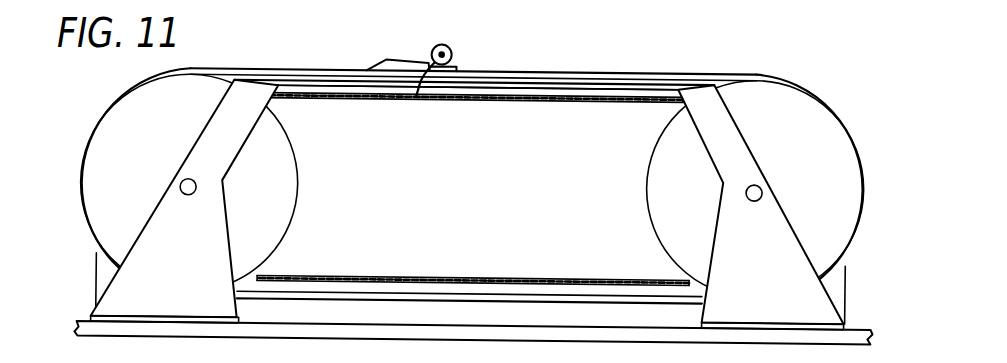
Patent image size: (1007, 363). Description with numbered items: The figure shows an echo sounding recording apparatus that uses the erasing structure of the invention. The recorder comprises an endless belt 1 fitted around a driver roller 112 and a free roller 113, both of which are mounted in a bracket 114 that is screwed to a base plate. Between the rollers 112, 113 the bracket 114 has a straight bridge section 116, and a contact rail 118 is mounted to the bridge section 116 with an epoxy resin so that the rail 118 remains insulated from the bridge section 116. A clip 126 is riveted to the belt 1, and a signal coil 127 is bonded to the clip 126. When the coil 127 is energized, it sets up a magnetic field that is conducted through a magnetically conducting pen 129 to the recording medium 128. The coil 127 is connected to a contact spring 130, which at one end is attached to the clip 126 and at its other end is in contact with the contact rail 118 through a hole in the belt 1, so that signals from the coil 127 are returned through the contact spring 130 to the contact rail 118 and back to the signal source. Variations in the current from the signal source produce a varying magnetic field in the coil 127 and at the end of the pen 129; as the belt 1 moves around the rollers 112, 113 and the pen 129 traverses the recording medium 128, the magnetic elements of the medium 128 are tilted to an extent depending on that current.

The endless belt 1 is at (696, 76).
The driver roller 112 is at (812, 112).
The free roller 113 is at (105, 114).
The bracket 114 is at (109, 297).
The straight bridge section 116 is at (603, 82).
The contact rail 118 is at (264, 77).
The clip 126 is at (455, 66).
The signal coil 127 is at (443, 44).
The recording medium 128 is at (297, 90).
The magnetically conducting pen 129 is at (424, 96).
The contact spring 130 is at (387, 59).